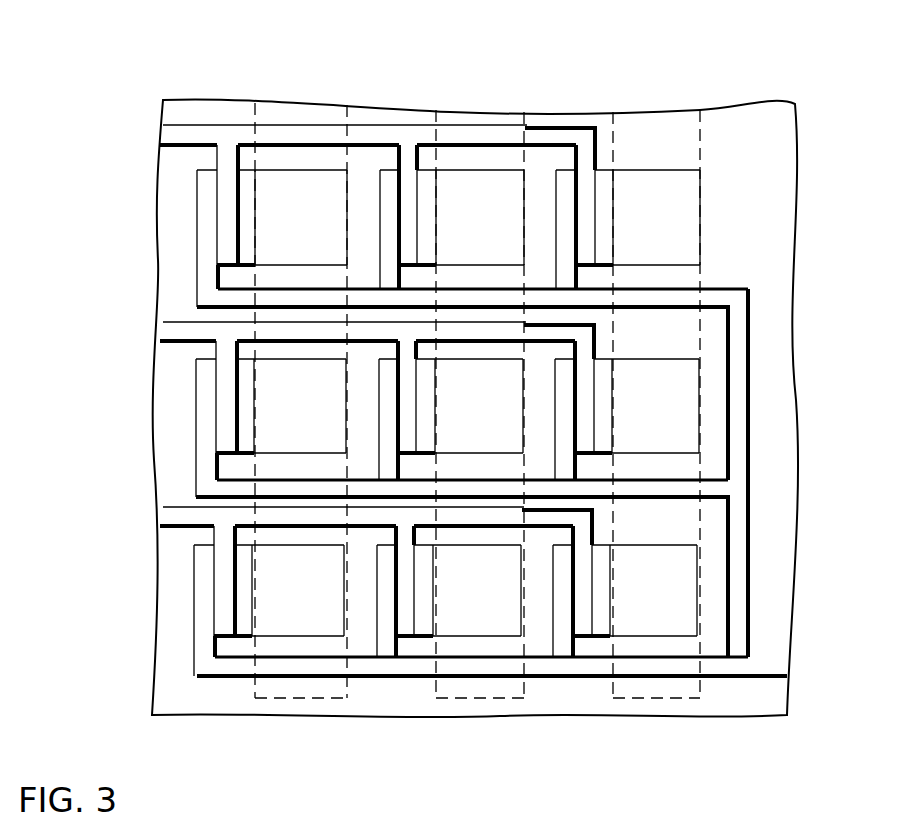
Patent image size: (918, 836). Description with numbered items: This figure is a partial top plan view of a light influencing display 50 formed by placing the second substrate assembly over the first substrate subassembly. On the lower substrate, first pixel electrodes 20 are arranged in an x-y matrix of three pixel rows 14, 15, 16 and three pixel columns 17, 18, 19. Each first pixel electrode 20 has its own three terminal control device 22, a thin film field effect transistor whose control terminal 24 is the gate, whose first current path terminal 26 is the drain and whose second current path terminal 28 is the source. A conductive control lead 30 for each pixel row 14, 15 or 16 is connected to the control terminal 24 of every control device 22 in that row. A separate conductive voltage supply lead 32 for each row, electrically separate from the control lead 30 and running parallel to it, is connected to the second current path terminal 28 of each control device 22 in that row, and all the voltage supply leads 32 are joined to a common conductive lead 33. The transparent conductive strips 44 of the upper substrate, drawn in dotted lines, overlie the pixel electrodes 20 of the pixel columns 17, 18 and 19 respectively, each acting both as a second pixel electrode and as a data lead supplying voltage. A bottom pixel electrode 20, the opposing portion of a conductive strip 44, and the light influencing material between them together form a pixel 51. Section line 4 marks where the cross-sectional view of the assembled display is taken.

The section line 4- 4 is at (181, 421).
The pixel row 14 is at (148, 213).
The pixel row 15 is at (148, 430).
The pixel row 16 is at (148, 587).
The pixel column 17 is at (300, 68).
The pixel column 18 is at (478, 68).
The pixel column 19 is at (655, 68).
The first pixel electrode 20 is at (302, 249).
The three terminal control device 22 is at (192, 243).
The control terminal 24 is at (230, 190).
The first current path terminal 26 is at (250, 228).
The second current path terminal 28 is at (207, 192).
The conductive control lead 30 is at (192, 135).
The conductive voltage supply lead 32 is at (715, 305).
The common conductive lead 33 is at (765, 667).
The transparent conductive strip 44 is at (293, 698).
The light influencing display 50 is at (808, 134).
The pixel 51 is at (353, 192).